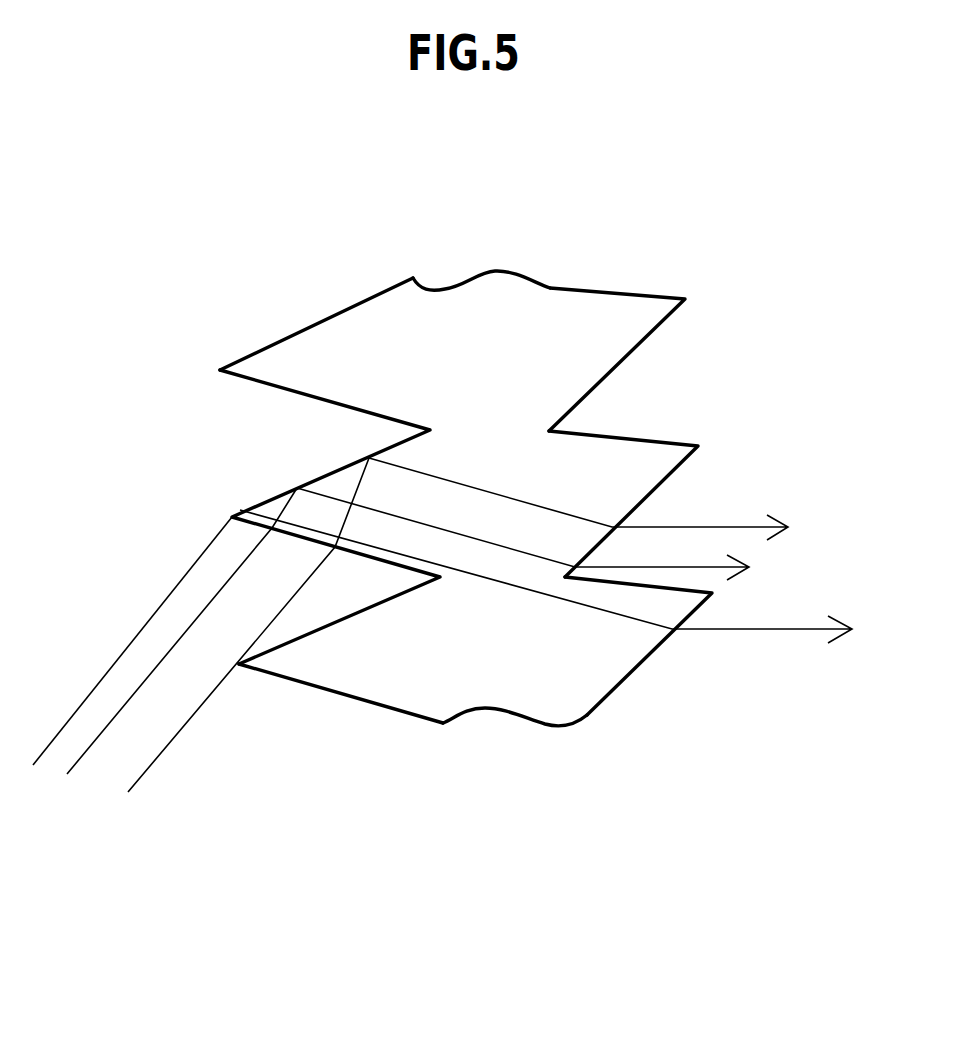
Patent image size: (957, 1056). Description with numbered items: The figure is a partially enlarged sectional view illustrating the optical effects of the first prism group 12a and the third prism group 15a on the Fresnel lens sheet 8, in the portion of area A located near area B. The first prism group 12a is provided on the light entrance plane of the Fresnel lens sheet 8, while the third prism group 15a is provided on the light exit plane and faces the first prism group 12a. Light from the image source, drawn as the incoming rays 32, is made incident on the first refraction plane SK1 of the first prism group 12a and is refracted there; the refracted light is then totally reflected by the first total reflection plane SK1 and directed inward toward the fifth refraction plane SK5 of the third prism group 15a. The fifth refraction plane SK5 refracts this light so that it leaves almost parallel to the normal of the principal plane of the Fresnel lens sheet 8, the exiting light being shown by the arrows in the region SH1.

The Fresnel lens sheet 8 is at (462, 512).
The first prism group 12a is at (280, 358).
The third prism group 15a is at (634, 312).
The first reflecting surface region SH1 is at (340, 468).
The first refraction plane SK1 is at (330, 687).
The fifth refraction plane SK5 is at (637, 668).
The incident light rays 32 is at (90, 748).